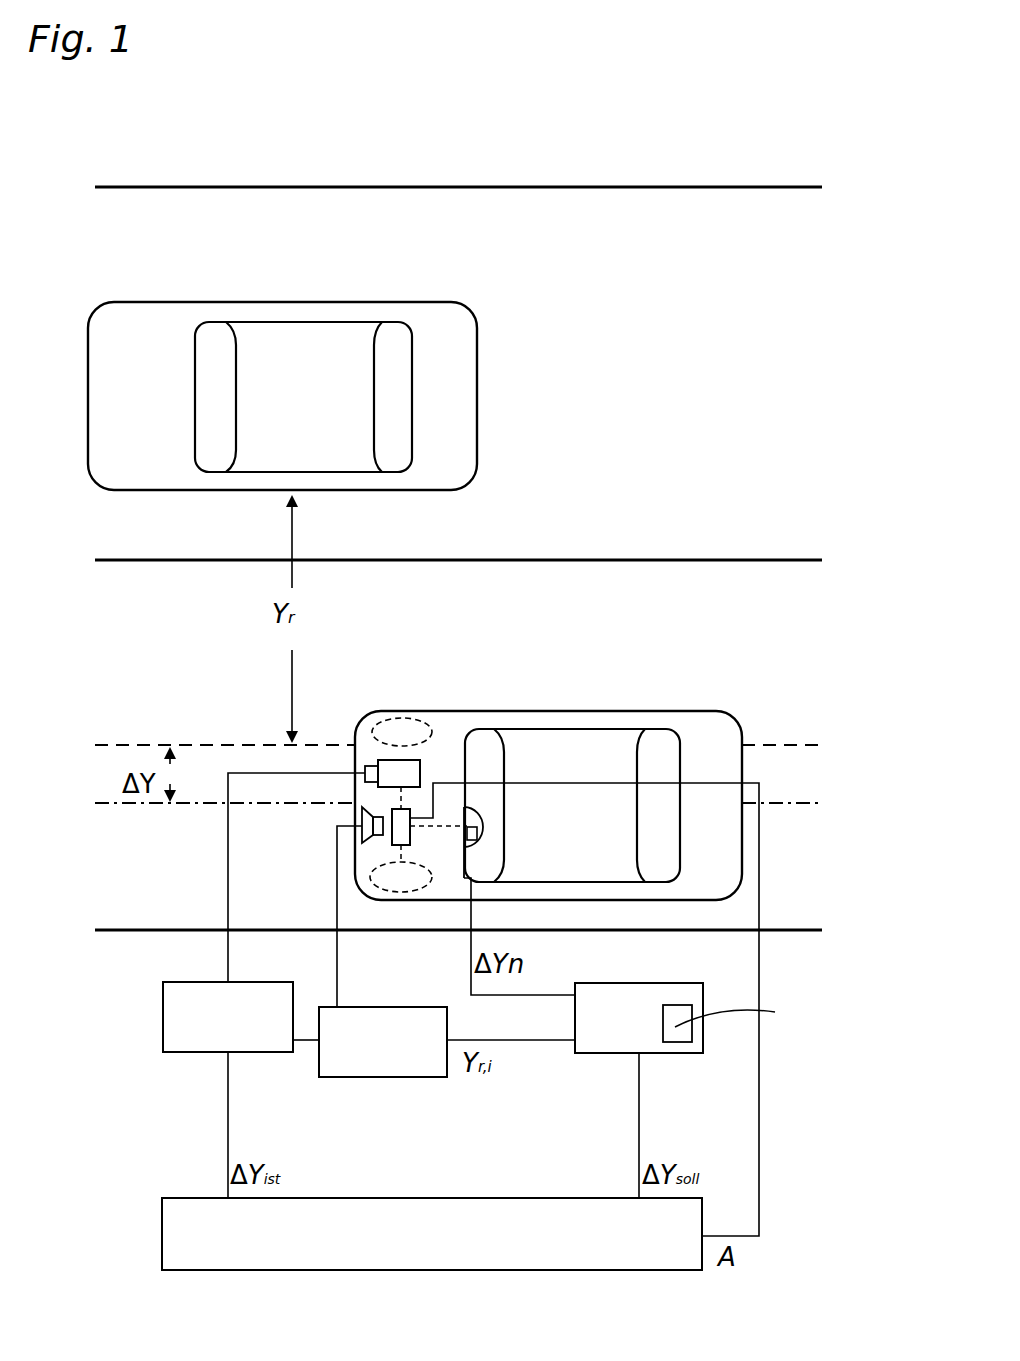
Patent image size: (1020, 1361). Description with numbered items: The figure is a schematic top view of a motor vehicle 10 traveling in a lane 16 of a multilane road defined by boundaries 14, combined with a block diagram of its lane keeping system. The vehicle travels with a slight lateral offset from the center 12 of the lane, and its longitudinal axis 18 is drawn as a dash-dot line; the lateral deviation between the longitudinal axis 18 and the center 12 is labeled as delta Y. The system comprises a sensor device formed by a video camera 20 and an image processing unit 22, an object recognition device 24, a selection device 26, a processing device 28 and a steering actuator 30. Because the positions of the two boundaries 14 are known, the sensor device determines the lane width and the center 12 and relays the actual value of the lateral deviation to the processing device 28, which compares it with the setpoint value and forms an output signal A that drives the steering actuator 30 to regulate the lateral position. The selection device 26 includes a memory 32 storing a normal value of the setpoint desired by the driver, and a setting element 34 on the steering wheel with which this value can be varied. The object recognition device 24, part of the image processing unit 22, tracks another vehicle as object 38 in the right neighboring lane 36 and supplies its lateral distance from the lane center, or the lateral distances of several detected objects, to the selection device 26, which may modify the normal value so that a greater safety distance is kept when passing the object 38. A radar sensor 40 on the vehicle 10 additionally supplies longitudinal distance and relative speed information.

The motor vehicle 10 is at (642, 706).
The center of the lane 12 is at (200, 742).
The boundaries 14 is at (150, 563).
The lane 16 is at (553, 612).
The longitudinal axis 18 is at (125, 806).
The video camera 20 is at (396, 767).
The image processing unit 22 is at (165, 1022).
The object recognition device 24 is at (357, 1062).
The selection device 26 is at (610, 1037).
The processing device 28 is at (378, 1222).
The steering actuator 30 is at (402, 833).
The memory 32 is at (675, 1027).
The setting element 34 is at (477, 833).
The right neighboring lane 36 is at (553, 240).
The object 38 is at (313, 335).
The radar sensor 40 is at (362, 818).